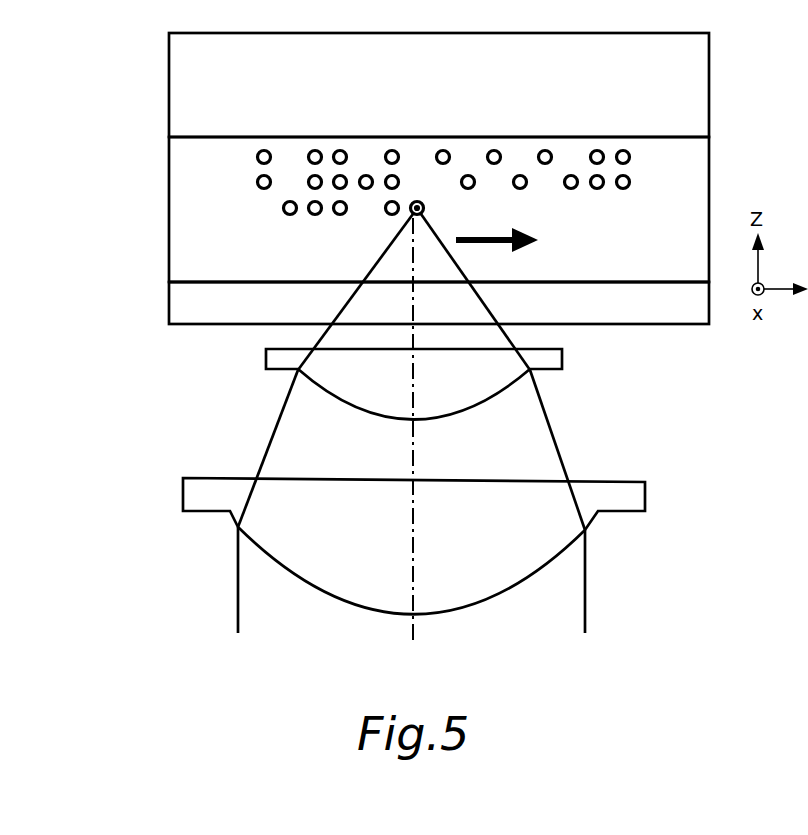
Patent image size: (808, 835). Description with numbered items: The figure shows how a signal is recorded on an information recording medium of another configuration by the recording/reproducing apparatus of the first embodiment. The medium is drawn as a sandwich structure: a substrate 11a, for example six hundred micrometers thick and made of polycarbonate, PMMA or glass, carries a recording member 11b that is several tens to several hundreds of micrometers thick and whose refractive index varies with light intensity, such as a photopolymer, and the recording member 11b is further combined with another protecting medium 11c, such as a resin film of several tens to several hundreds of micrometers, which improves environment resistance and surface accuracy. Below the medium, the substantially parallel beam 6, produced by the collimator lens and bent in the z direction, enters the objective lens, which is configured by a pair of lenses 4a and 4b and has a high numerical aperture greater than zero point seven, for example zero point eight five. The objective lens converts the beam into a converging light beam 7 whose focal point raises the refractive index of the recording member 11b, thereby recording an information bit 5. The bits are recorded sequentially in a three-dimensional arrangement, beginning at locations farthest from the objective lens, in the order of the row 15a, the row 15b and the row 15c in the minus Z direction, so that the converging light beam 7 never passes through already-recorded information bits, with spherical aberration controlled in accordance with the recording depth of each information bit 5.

The substrate 11a is at (202, 89).
The recording member 11b is at (205, 268).
The third layer 11c is at (205, 307).
The row of information bits 15a is at (242, 155).
The row of information bits 15b is at (237, 178).
The row of information bits 15c is at (245, 206).
The information bit 5 is at (425, 208).
The converging light beam 7 is at (368, 298).
The combination lens 4a is at (498, 375).
The combination lens 4b is at (542, 538).
The substantially parallel beam 6 is at (272, 608).